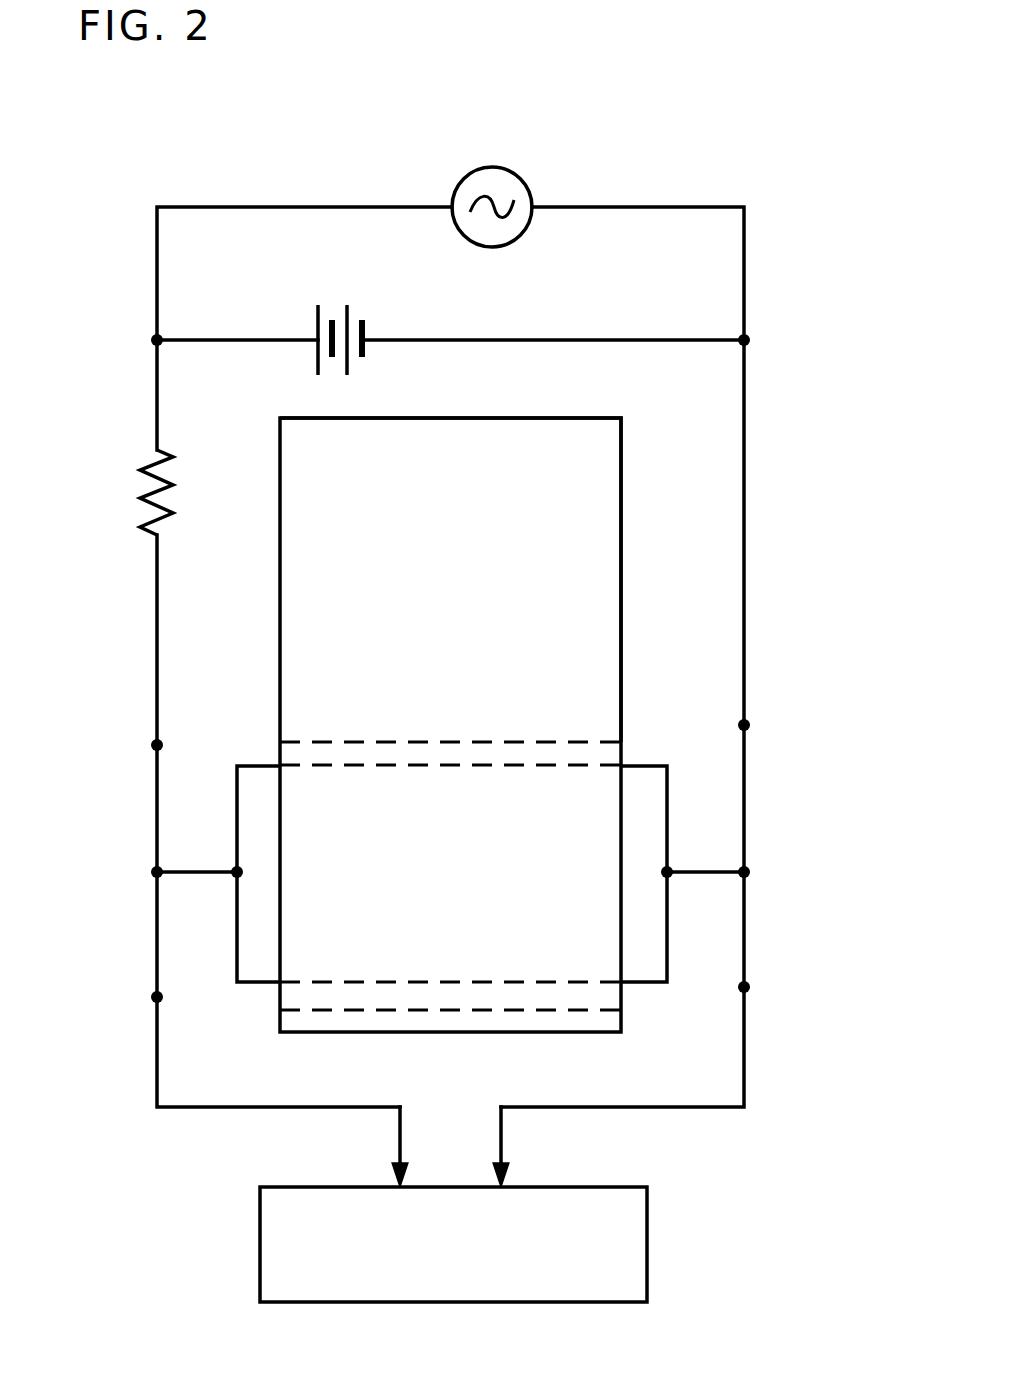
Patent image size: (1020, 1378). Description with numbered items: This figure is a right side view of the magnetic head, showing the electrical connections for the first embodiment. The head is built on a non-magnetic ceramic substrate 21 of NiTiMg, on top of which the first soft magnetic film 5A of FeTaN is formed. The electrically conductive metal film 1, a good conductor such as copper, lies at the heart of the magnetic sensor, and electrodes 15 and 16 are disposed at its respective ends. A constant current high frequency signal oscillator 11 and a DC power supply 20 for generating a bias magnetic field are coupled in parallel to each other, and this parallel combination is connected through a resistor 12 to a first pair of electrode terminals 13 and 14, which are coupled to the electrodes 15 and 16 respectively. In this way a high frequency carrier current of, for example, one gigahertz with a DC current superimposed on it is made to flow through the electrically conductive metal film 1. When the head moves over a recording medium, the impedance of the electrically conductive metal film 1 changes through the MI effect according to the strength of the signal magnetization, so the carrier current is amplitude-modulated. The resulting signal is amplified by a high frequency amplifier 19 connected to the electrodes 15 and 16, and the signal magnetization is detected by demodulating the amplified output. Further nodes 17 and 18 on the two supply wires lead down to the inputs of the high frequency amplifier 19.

The electrically conductive metal film 1 is at (643, 775).
The first soft magnetic film 5A is at (605, 481).
The constant current high frequency signal oscillator 11 is at (466, 180).
The resistor 12 is at (140, 497).
The electrode terminal 13 is at (157, 745).
The electrode terminal 14 is at (744, 725).
The electrode 15 is at (237, 870).
The electrode 16 is at (668, 870).
The node 17 is at (157, 997).
The node 18 is at (744, 987).
The high frequency amplifier 19 is at (648, 1215).
The DC power supply 20 is at (363, 315).
The non-magnetic ceramic substrate 21 is at (597, 572).